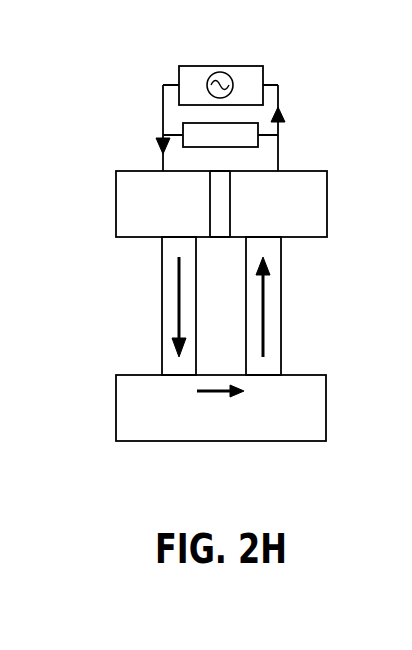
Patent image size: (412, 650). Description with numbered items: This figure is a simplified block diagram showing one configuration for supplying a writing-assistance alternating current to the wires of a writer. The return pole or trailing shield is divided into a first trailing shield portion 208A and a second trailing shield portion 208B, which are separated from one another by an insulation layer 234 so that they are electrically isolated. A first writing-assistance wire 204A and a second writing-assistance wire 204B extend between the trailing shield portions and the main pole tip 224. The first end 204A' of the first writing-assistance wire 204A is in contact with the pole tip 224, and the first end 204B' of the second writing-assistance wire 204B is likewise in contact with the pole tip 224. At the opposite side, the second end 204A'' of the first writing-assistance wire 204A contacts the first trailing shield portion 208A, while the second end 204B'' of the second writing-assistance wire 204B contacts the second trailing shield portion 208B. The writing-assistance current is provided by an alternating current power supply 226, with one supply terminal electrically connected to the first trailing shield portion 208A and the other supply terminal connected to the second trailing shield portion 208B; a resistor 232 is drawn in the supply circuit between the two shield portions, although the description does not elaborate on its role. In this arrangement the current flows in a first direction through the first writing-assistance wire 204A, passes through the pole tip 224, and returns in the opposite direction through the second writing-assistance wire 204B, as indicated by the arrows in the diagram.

The alternating current power supply 226 is at (232, 75).
The resistor 232 is at (246, 127).
The insulation layer 234 is at (221, 185).
The first trailing shield portion 208A is at (115, 178).
The second trailing shield portion 208B is at (328, 177).
The first writing-assistance wire 204A is at (142, 306).
The first end of first writing-assistance wire 204A' is at (134, 358).
The second end of first writing-assistance wire 204A'' is at (131, 256).
The second writing-assistance wire 204B is at (297, 306).
The first end of second writing-assistance wire 204B' is at (309, 358).
The second end of second writing-assistance wire 204B'' is at (312, 256).
The pole tip 224 is at (128, 402).